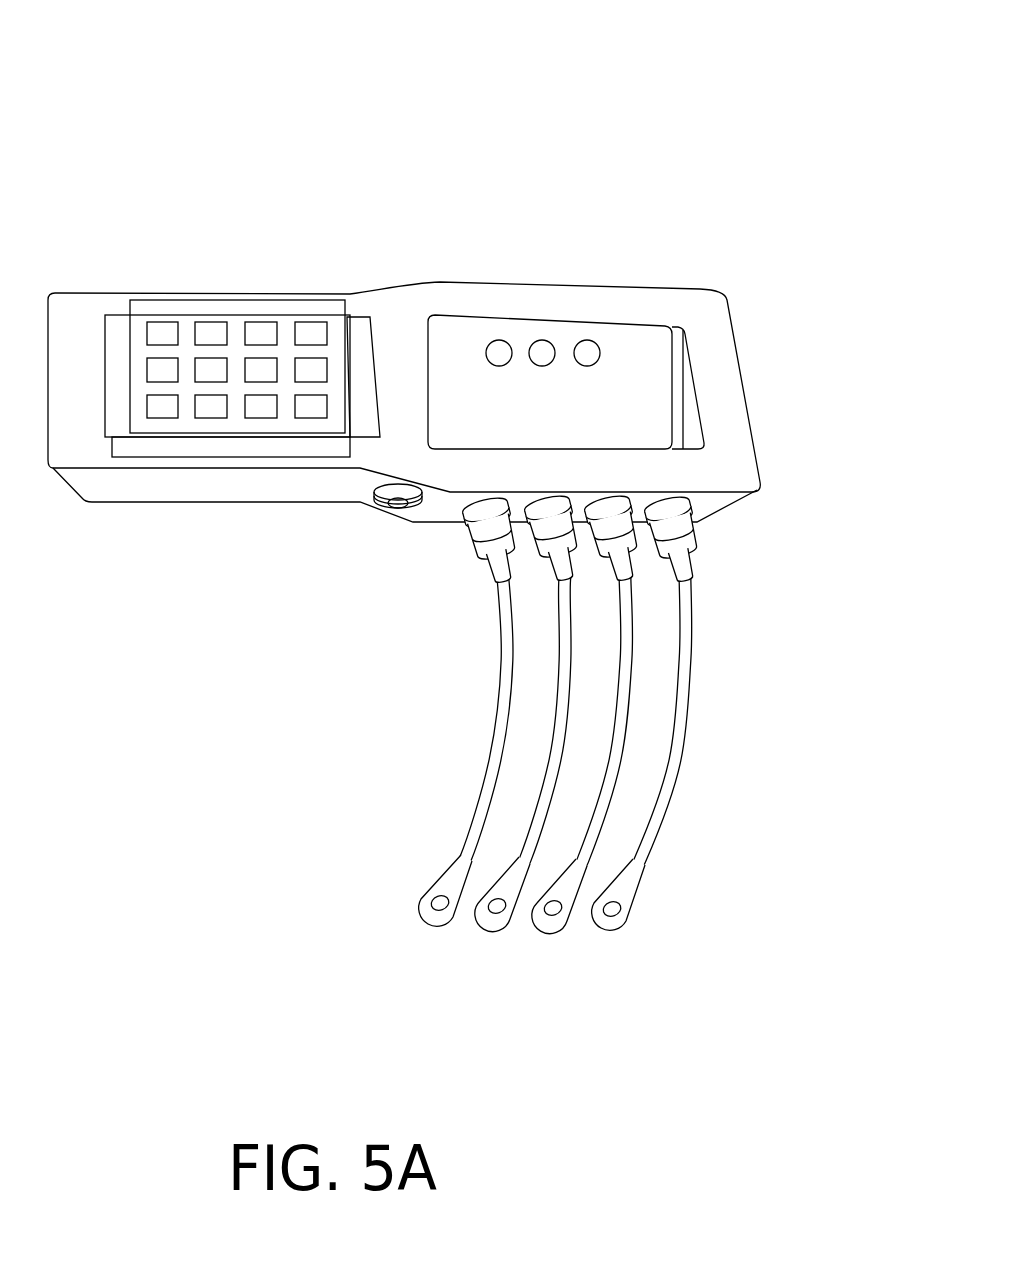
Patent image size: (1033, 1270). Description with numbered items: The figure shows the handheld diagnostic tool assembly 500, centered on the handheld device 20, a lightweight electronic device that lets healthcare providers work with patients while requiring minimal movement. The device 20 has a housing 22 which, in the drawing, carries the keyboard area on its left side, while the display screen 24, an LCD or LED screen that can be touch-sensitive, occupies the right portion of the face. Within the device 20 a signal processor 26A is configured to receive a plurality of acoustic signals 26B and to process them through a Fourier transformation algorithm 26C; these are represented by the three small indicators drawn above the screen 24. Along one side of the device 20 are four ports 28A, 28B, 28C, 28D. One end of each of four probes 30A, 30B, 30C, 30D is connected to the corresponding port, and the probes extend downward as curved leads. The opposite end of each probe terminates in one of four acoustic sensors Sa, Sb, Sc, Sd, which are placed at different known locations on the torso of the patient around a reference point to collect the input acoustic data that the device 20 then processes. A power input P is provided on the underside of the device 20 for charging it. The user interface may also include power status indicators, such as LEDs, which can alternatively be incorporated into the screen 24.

The monitoring system 500 is at (620, 48).
The handheld diagnostic tool 20 is at (392, 307).
The housing 22 is at (163, 335).
The display screen 24 is at (637, 405).
The signal processor 26A is at (587, 340).
The acoustic signals 26B is at (542, 340).
The Fourier transformation algorithm 26C is at (497, 340).
The port 28A is at (467, 542).
The port 28B is at (513, 583).
The port 28C is at (623, 528).
The port 28D is at (683, 525).
The probe 30A is at (427, 913).
The probe 30B is at (492, 918).
The probe 30C is at (560, 918).
The probe 30D is at (622, 905).
The acoustic sensor Sa is at (430, 902).
The acoustic sensor Sb is at (490, 918).
The acoustic sensor Sc is at (548, 918).
The acoustic sensor Sd is at (618, 918).
The power input P is at (380, 508).